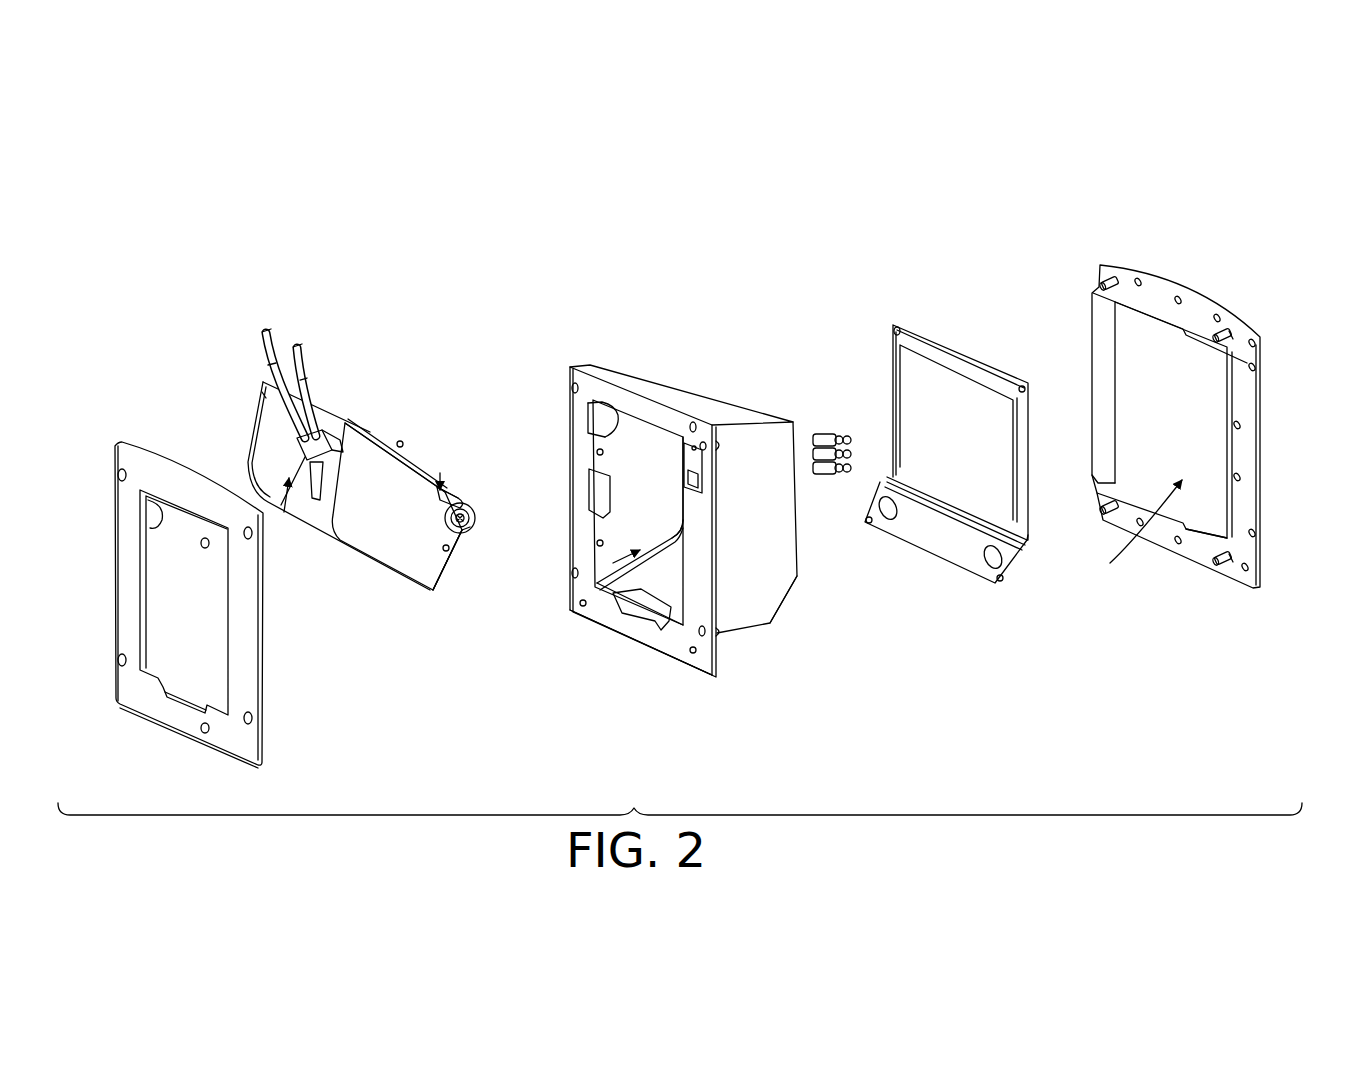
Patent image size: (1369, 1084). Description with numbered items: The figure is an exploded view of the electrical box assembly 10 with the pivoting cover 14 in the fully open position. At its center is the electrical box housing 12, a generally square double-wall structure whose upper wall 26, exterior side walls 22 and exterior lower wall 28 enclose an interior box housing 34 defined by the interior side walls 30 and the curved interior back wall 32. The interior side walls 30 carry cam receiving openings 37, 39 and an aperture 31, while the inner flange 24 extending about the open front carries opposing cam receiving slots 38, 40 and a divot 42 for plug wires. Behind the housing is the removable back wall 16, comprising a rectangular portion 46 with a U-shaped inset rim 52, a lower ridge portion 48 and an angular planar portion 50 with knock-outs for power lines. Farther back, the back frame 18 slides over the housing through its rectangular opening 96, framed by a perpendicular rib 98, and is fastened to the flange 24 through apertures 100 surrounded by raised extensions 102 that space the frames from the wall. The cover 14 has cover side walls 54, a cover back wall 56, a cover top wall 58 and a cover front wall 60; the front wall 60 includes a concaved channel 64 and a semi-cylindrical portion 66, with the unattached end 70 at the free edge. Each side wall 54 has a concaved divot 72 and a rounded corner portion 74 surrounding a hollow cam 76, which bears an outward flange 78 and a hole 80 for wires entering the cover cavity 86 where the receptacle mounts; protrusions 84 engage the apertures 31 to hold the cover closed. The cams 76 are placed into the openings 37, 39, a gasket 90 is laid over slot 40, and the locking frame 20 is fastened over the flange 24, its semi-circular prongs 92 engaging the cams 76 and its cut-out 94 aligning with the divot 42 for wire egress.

The electrical box assembly 10 is at (966, 219).
The electrical box housing 12 is at (657, 372).
The pivoting cover 14 is at (362, 430).
The removable back wall 16 is at (940, 400).
The back frame 18 is at (1152, 290).
The locking frame 20 is at (153, 475).
The exterior side wall 22 is at (778, 565).
The inner flange 24 is at (665, 643).
The upper wall 26 is at (716, 395).
The exterior lower wall 28 is at (745, 642).
The interior side wall 30 is at (602, 532).
The aperture 31 is at (597, 452).
The interior back wall 32 is at (655, 580).
The interior box housing 34 is at (610, 565).
The cam receiving opening 37 is at (603, 415).
The cam receiving slot 38 is at (590, 420).
The cam receiving opening 39 is at (700, 466).
The cam receiving slot 40 is at (700, 478).
The divot 42 is at (640, 610).
The rectangular portion 46 is at (990, 413).
The lower ridge portion 48 is at (1024, 542).
The angular planar portion 50 is at (968, 555).
The inset rim 52 is at (1014, 427).
The cover side wall 54 is at (258, 432).
The cover back wall 56 is at (360, 575).
The cover top wall 58 is at (458, 560).
The cover front wall 60 is at (405, 430).
The concaved channel 64 is at (441, 470).
The semi-cylindrical portion 66 is at (468, 505).
The unattached end 70 is at (255, 392).
The concaved divot 72 is at (469, 508).
The rounded corner portion 74 is at (452, 495).
The cam 76 is at (475, 518).
The flange 78 is at (468, 532).
The hole 80 is at (465, 535).
The protrusion 84 is at (401, 440).
The cover cavity 86 is at (285, 520).
The gasket 90 is at (607, 490).
The semi-circular prong 92 is at (153, 503).
The cut-out 94 is at (183, 707).
The rectangular opening 96 is at (1136, 533).
The rib 98 is at (1206, 538).
The aperture 100 is at (1103, 284).
The raised extension 102 is at (1234, 340).